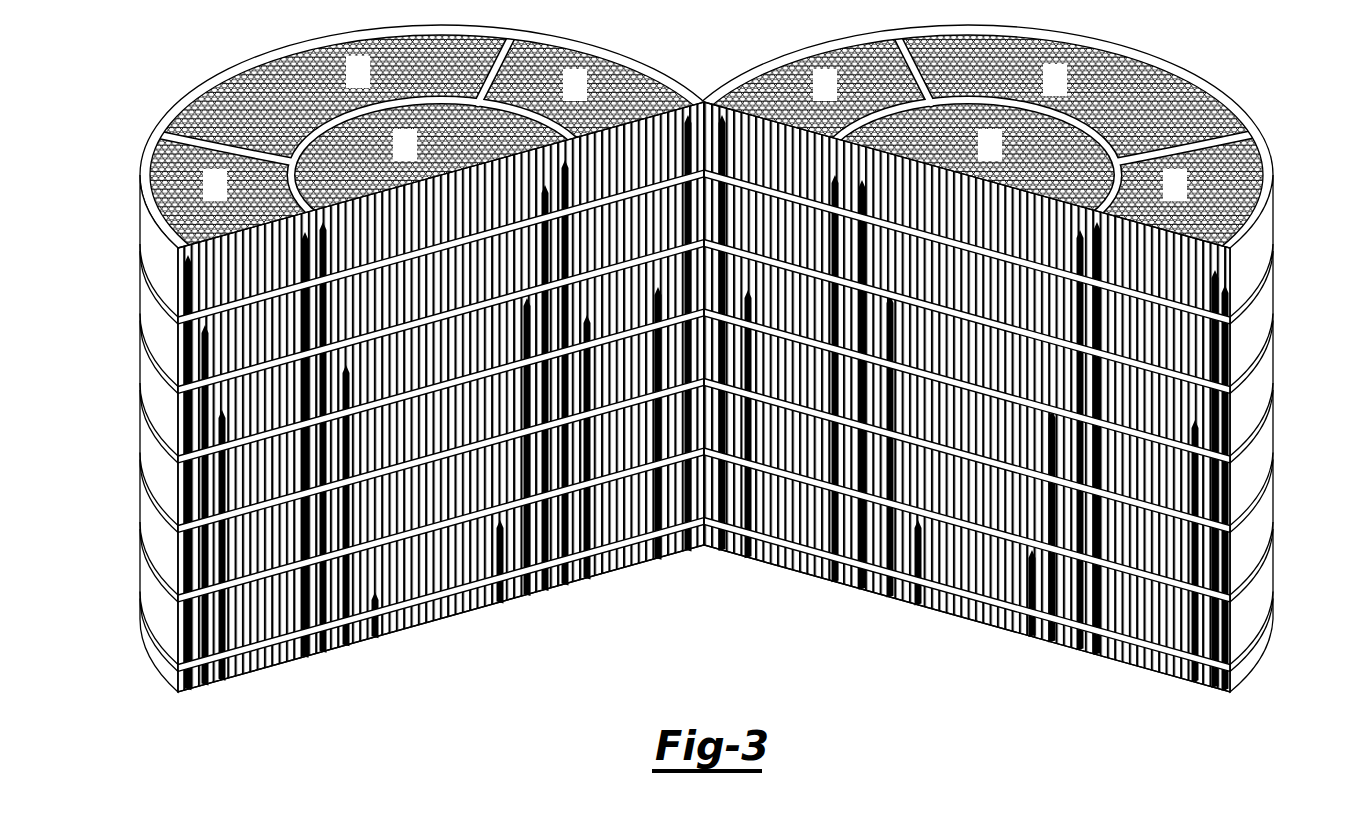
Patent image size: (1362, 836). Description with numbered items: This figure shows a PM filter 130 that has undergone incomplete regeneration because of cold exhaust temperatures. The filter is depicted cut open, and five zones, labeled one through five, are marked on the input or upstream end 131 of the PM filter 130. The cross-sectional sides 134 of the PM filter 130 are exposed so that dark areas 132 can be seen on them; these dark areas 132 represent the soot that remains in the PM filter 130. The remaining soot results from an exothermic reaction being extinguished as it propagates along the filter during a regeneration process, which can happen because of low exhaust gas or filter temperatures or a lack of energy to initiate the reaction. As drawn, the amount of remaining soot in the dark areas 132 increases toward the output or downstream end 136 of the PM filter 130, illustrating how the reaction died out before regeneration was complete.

The PM filter 130 is at (1180, 65).
The input (upstream end) 131 is at (1268, 180).
The dark areas 132 is at (1050, 642).
The cross-sectional sides 134 is at (185, 434).
The output (downstream end) 136 is at (790, 552).